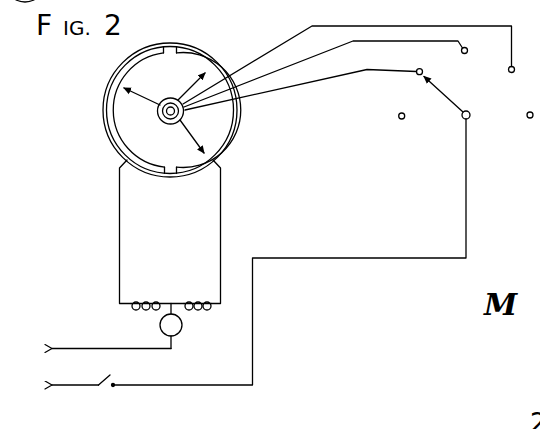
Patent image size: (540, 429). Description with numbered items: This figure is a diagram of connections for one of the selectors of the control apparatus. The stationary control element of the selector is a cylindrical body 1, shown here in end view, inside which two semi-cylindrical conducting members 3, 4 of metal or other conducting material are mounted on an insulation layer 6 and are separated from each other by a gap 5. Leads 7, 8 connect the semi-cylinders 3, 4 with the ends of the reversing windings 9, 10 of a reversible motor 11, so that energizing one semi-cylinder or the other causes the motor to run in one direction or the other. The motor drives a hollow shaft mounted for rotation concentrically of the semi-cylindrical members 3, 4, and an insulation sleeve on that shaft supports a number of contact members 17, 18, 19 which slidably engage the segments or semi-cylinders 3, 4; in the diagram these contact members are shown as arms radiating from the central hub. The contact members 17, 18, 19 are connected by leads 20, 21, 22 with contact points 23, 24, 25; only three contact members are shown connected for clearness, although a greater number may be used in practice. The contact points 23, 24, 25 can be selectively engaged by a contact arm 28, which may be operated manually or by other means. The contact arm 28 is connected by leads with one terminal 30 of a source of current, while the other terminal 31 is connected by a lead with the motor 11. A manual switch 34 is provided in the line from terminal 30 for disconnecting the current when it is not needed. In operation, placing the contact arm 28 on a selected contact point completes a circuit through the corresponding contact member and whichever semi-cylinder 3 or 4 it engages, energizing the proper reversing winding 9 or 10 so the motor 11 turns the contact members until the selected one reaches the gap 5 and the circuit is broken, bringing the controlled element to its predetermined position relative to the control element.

The cylindrical body 1 is at (110, 83).
The semi-cylindrical conducting member 3 is at (120, 137).
The semi-cylindrical conducting member 4 is at (222, 124).
The gap 5 is at (170, 55).
The insulation layer 6 is at (105, 123).
The lead 7 is at (118, 196).
The lead 8 is at (221, 217).
The reversing winding 9 is at (141, 308).
The reversing winding 10 is at (203, 309).
The reversible motor 11 is at (182, 330).
The contact member 17 is at (195, 86).
The contact member 18 is at (186, 133).
The contact member 19 is at (146, 97).
The lead 20 is at (376, 26).
The lead 21 is at (394, 42).
The lead 22 is at (388, 71).
The contact point 23 is at (414, 77).
The contact point 24 is at (468, 50).
The contact point 25 is at (515, 70).
The contact arm 28 is at (445, 97).
The terminal 30 is at (58, 388).
The terminal 31 is at (63, 338).
The manual switch 34 is at (100, 372).